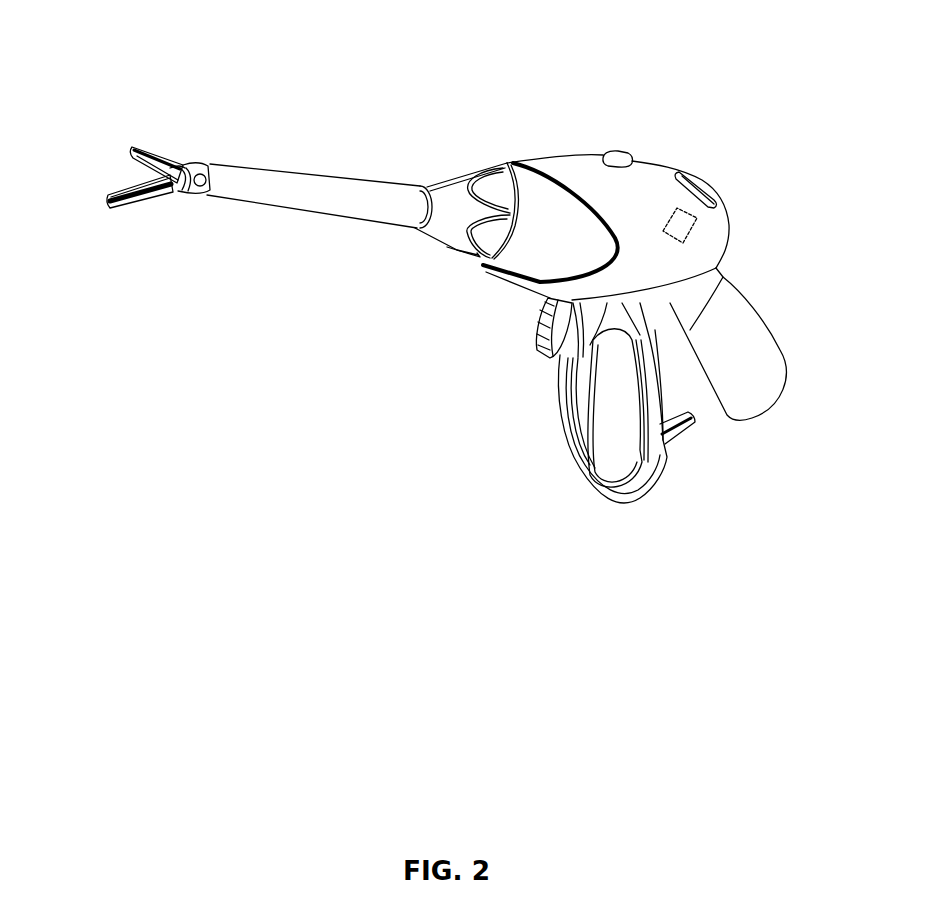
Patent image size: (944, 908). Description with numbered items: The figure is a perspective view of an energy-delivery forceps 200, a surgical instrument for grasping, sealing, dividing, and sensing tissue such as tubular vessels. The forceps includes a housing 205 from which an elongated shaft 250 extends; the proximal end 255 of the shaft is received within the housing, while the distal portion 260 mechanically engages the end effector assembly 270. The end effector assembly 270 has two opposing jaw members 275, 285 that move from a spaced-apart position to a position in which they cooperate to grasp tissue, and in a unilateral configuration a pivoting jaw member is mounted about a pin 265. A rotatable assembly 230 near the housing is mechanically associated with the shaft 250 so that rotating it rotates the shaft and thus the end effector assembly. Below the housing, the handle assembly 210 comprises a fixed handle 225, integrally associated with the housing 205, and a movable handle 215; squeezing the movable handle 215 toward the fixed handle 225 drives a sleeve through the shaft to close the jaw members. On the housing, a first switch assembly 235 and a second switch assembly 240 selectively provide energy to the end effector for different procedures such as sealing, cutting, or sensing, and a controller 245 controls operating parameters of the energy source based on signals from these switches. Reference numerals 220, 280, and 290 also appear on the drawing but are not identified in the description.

The energy-delivery forceps 200 is at (473, 80).
The housing 205 is at (565, 136).
The handle assembly 210 is at (695, 450).
The movable handle 215 is at (562, 437).
The trigger 220 is at (530, 327).
The fixed handle 225 is at (772, 368).
The rotatable assembly 230 is at (450, 223).
The first switch assembly 235 is at (702, 181).
The second switch assembly 240 is at (621, 152).
The controller 245 is at (689, 233).
The elongated shaft 250 is at (318, 178).
The proximal end 255 is at (421, 190).
The distal portion 260 is at (210, 165).
The pin 265 is at (202, 194).
The end effector assembly 270 is at (200, 142).
The jaw member 275 is at (150, 140).
The first tissue contacting surface 280 is at (140, 165).
The jaw member 285 is at (138, 207).
The second jaw member 290 is at (110, 190).